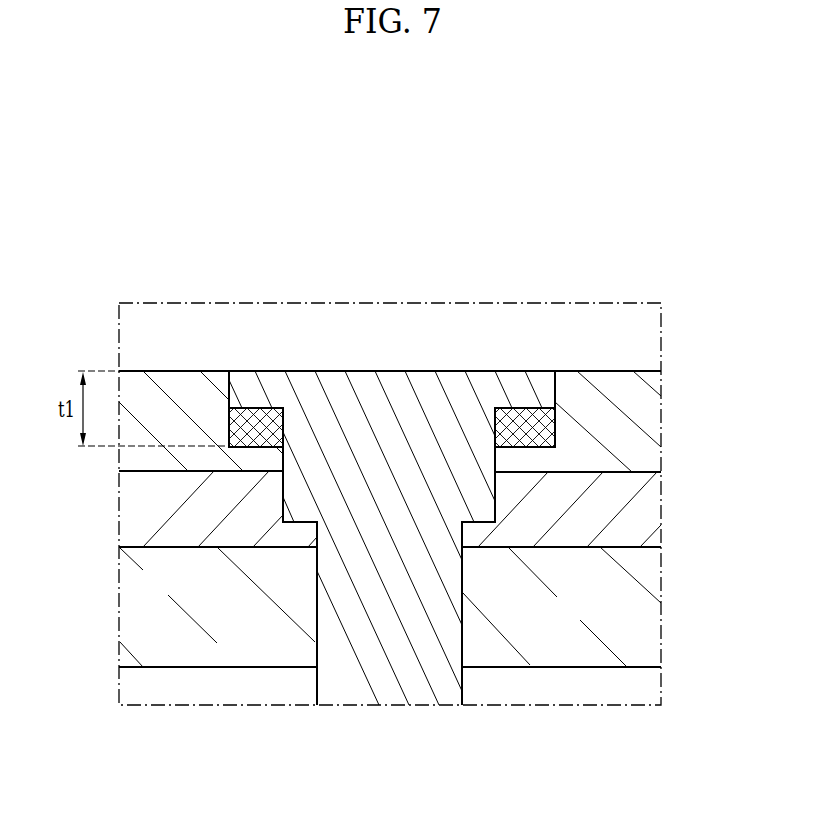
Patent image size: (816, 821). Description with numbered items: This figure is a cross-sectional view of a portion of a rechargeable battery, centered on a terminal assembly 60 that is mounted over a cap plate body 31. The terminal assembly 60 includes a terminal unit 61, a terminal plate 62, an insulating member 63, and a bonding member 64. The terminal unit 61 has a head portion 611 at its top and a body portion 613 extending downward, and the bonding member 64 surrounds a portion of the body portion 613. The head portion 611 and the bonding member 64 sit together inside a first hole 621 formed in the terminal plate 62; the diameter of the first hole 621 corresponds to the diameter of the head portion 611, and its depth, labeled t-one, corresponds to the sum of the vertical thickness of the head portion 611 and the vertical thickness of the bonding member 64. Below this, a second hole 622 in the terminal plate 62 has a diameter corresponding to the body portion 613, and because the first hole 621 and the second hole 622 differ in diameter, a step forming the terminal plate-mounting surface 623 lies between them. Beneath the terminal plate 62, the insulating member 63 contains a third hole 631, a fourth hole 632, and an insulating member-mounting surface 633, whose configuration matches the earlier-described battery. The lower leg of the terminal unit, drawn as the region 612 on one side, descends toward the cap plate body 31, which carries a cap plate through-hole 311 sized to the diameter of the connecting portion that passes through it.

The terminal assembly 60 is at (230, 356).
The terminal unit 61 is at (317, 356).
The head portion 611 is at (417, 383).
The left lower portion of rotor body 612 is at (293, 497).
The body portion 613 is at (430, 605).
The bonding member 64 is at (518, 417).
The first hole 621 is at (556, 417).
The terminal plate 62 is at (172, 459).
The second hole 622 is at (497, 458).
The terminal plate-mounting surface 623 is at (530, 447).
The insulating member 63 is at (170, 511).
The third hole 631 is at (473, 537).
The insulating member-mounting surface 633 is at (467, 528).
The fourth hole 632 is at (470, 530).
The cap plate body 31 is at (170, 612).
The cap plate through-hole 311 is at (473, 632).